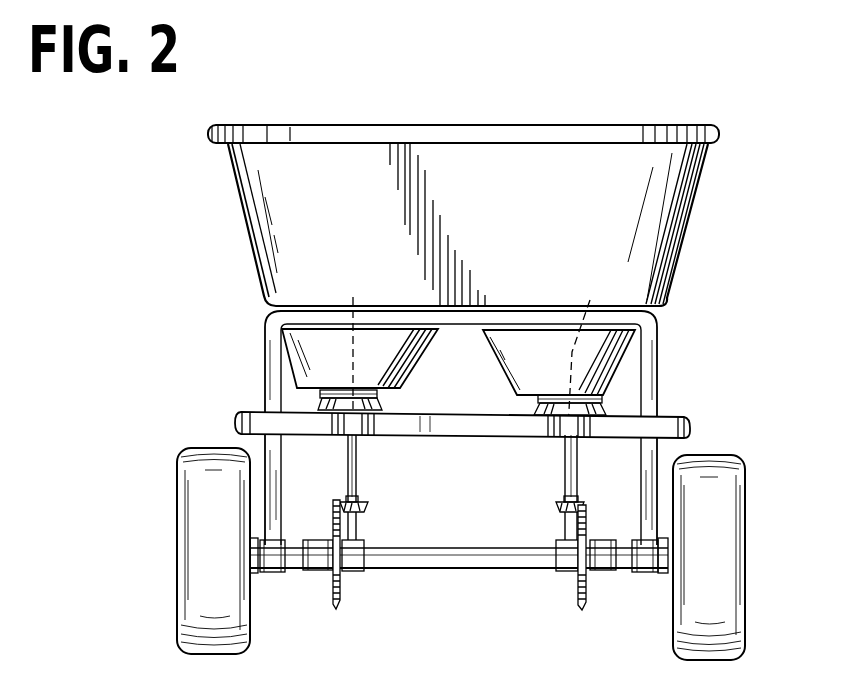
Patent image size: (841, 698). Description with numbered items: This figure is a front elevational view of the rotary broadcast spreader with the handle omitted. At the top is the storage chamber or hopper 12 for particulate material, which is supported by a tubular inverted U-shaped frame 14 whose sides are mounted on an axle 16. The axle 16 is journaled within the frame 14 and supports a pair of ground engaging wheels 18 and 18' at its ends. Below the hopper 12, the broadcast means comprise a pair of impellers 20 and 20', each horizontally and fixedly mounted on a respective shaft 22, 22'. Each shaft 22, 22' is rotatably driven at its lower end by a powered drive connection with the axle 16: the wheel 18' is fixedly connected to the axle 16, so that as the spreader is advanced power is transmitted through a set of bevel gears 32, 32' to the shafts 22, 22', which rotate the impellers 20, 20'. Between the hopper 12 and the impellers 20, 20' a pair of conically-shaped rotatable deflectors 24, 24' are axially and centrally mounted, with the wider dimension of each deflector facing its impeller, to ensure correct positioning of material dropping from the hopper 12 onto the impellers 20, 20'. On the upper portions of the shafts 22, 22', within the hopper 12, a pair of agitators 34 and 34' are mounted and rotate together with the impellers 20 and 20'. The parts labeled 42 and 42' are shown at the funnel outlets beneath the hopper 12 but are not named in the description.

The hopper 12 is at (677, 217).
The inverted U-shaped frame 14 is at (267, 378).
The axle 16 is at (440, 570).
The ground engaging wheel 18 is at (730, 531).
The ground engaging wheel 18' is at (193, 525).
The impeller 20 is at (462, 452).
The impeller 20' is at (443, 403).
The shaft 22 is at (587, 487).
The shaft 22' is at (373, 487).
The conically-shaped rotatable deflector 24 is at (559, 416).
The conically-shaped rotatable deflector 24' is at (360, 369).
The bevel gear 32 is at (570, 582).
The bevel gear 32' is at (317, 578).
The agitator 34 is at (584, 343).
The agitator 34' is at (346, 340).
The funnel outlet 42 is at (639, 353).
The funnel outlet 42' is at (294, 349).